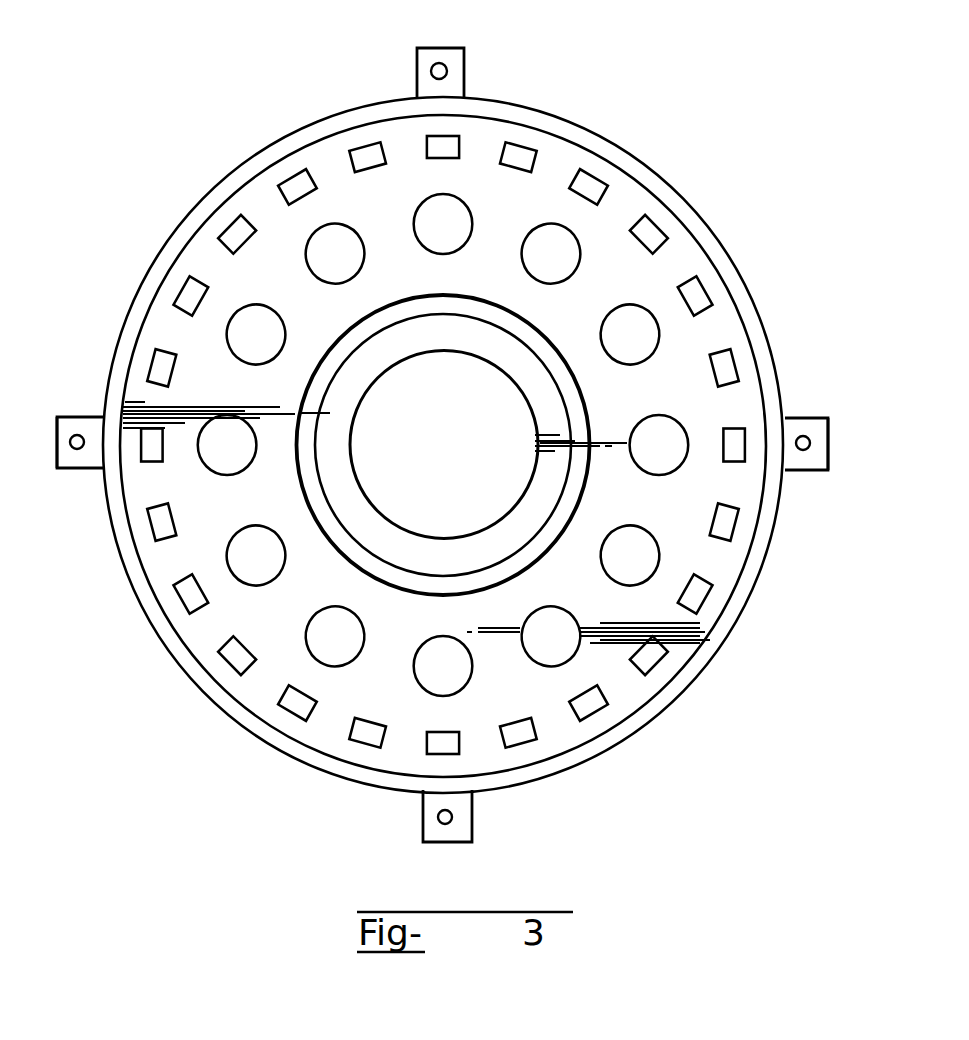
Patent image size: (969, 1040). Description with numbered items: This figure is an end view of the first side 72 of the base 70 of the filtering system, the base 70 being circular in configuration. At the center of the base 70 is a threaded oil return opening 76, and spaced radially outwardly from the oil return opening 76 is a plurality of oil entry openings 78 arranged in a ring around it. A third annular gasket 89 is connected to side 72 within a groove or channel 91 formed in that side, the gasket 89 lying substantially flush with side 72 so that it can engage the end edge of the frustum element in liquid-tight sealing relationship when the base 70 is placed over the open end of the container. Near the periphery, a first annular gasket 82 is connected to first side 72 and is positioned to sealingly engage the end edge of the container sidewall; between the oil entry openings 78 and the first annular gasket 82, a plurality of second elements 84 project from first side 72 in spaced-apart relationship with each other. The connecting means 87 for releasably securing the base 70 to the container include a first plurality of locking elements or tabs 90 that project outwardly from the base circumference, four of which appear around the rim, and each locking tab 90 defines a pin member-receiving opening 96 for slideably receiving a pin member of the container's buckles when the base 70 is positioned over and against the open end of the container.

The base 70 is at (766, 318).
The first side 72 is at (603, 660).
The threaded oil return opening 76 is at (493, 485).
The oil entry openings 78 is at (537, 278).
The first annular gasket 82 is at (765, 377).
The second elements 84 is at (532, 160).
The connecting means 87 is at (467, 78).
The third annular gasket 89 is at (423, 582).
The locking tabs 90 is at (830, 463).
The groove or channel 91 is at (330, 538).
The pin member-receiving openings 96 is at (803, 443).